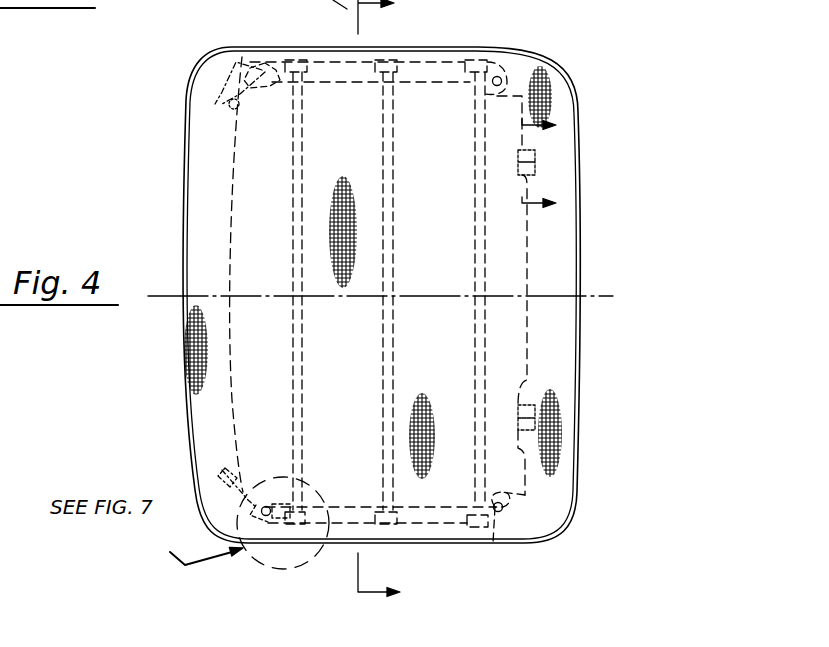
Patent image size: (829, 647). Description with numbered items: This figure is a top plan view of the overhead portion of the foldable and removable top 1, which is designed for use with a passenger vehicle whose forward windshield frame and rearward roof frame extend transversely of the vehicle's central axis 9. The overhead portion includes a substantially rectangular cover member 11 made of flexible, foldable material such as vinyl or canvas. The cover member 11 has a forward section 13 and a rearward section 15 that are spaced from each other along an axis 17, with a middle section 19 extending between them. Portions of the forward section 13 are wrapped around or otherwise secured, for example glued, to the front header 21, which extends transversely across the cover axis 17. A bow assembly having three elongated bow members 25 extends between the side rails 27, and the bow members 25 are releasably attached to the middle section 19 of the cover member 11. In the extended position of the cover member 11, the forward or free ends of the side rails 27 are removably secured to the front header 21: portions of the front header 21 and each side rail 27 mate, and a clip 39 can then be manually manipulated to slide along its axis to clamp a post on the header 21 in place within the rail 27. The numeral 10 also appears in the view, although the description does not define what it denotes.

The roof panel assembly 1 is at (614, 121).
The section line 9- 9 is at (366, 303).
The fastening points 10 is at (279, 89).
The reinforcement frame 11 is at (471, 45).
The inner edge region 13 is at (203, 255).
The outer edge flange 15 is at (553, 271).
The center line 17 is at (600, 297).
The panel surface 19 is at (341, 365).
The side edge 21 is at (218, 453).
The reinforcement strip 25 is at (302, 163).
The transverse strip 27 is at (360, 507).
The corner fastening detail 39 is at (280, 478).